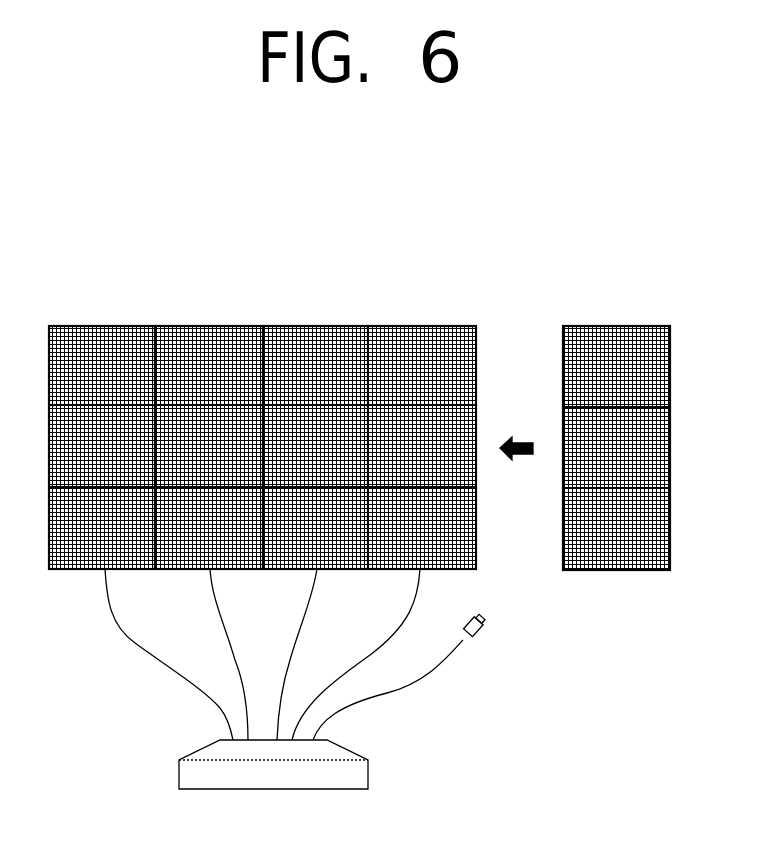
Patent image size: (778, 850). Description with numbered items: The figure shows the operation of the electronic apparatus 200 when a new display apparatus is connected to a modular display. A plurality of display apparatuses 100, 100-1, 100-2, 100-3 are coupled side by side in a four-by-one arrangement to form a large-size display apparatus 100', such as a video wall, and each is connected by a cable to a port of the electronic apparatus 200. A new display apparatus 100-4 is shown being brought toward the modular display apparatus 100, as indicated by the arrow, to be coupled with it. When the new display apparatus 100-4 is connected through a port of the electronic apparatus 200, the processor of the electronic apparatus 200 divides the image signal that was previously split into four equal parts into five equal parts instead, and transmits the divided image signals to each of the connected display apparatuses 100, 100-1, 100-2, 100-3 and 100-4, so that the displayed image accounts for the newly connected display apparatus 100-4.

The modular display apparatus 100 is at (102, 417).
The display apparatus 100-1 is at (199, 325).
The display apparatus 100-2 is at (304, 325).
The display apparatus 100-3 is at (410, 325).
The large-size display apparatus 100' is at (299, 403).
The new display apparatus 100-4 is at (603, 325).
The electronic apparatus 200 is at (363, 780).